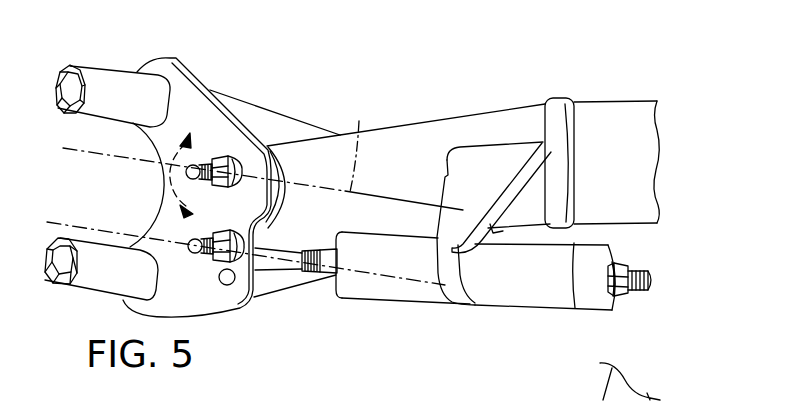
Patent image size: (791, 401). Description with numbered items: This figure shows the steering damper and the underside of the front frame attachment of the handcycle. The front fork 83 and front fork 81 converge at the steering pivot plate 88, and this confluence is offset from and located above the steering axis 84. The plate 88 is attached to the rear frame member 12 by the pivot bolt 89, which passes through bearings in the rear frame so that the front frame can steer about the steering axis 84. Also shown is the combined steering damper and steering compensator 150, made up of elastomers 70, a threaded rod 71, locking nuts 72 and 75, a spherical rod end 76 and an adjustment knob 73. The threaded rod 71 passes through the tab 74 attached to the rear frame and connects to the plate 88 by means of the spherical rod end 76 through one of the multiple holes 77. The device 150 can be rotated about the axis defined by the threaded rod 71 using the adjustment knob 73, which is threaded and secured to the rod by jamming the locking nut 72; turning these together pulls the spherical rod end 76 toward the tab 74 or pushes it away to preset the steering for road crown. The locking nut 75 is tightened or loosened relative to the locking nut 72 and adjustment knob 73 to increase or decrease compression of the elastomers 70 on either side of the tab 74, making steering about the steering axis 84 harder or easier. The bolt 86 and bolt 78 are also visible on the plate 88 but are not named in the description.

The rear frame member 12 is at (487, 123).
The elastomers 70 is at (523, 292).
The threaded rod 71 is at (653, 281).
The locking nut 72 is at (625, 267).
The adjustment knob 73 is at (620, 308).
The tab 74 is at (453, 300).
The locking nut 75 is at (323, 274).
The spherical rod end 76 is at (285, 268).
The holes 77 is at (222, 288).
The lower pivot bolt 78 is at (200, 255).
The front fork 81 is at (97, 288).
The front fork 83 is at (97, 72).
The steering axis 84 is at (246, 191).
The upper pivot bolt 86 is at (223, 165).
The steering pivot plate 88 is at (183, 72).
The pivot bolt 89 is at (188, 164).
The combined steering damper and steering compensator 150 is at (387, 290).